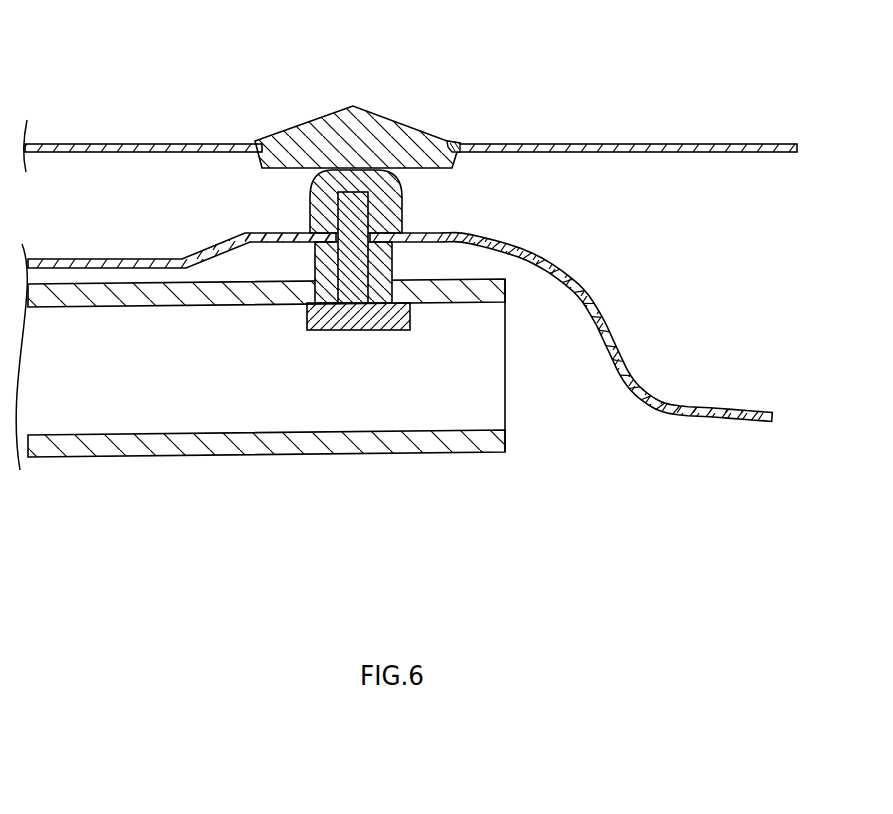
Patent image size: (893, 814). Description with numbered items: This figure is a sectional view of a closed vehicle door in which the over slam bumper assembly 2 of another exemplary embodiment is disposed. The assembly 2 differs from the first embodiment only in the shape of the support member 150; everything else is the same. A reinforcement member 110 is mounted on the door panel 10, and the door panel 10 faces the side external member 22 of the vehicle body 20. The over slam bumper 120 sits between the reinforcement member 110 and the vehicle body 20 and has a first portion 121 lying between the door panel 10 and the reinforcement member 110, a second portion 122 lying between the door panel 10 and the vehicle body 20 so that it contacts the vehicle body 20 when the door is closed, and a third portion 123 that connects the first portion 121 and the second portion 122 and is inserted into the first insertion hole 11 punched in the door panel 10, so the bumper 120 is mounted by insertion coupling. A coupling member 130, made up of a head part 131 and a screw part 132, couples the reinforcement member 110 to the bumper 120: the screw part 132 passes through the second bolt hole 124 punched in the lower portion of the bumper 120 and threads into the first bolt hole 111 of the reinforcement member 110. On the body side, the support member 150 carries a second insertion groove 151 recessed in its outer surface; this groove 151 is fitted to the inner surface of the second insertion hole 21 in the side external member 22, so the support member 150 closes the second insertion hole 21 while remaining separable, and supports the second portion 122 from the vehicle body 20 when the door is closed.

The over slam bumper assembly 2 is at (196, 184).
The door panel 10 is at (98, 262).
The first insertion hole 11 is at (330, 262).
The vehicle body 20 is at (411, 102).
The second insertion hole 21 is at (463, 147).
The side external member 22 is at (593, 147).
The reinforcement member 110 is at (284, 453).
The first bolt hole 111 is at (393, 331).
The over slam bumper 120 is at (513, 176).
The first portion 121 is at (388, 262).
The second portion 122 is at (401, 184).
The third portion 123 is at (375, 236).
The second bolt hole 124 is at (296, 237).
The coupling member 130 is at (300, 348).
The head part 131 is at (307, 332).
The screw part 132 is at (306, 304).
The support member 150 is at (365, 92).
The second insertion groove 151 is at (450, 139).